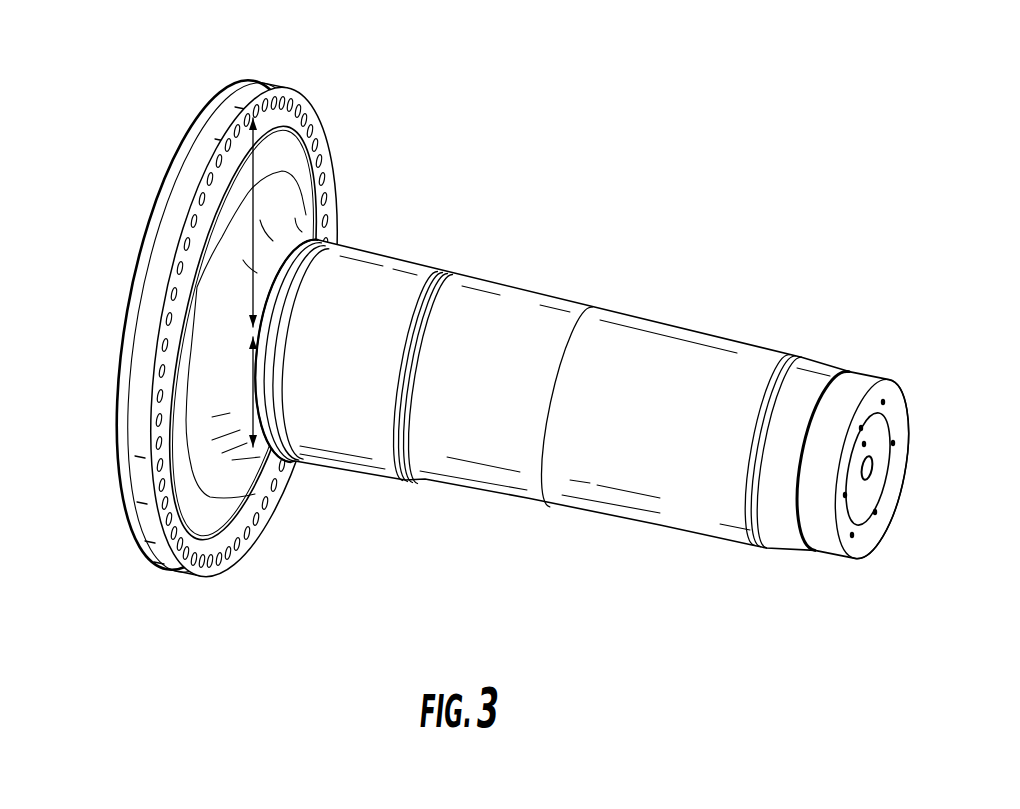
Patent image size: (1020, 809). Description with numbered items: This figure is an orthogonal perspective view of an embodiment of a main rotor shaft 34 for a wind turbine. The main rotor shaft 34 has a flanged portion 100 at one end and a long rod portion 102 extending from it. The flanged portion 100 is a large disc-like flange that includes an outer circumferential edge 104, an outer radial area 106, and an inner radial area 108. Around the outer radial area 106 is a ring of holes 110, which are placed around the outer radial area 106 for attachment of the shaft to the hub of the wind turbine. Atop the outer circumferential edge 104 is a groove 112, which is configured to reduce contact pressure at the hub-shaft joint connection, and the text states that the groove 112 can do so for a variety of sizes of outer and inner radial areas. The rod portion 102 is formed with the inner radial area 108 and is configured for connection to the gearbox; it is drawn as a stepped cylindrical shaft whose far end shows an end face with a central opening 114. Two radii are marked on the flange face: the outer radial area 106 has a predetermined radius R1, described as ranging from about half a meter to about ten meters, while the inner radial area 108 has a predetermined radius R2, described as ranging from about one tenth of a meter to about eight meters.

The main rotor shaft 34 is at (147, 667).
The flanged portion 100 is at (148, 97).
The rod portion 102 is at (619, 551).
The outer circumferential edge 104 is at (266, 90).
The outer radial area 106 is at (203, 549).
The inner radial area 108 is at (226, 474).
The holes 110 is at (174, 325).
The groove 112 is at (197, 144).
The center bore 114 is at (862, 487).
The predetermined radius of outer radial area R1 is at (252, 273).
The predetermined radius of inner radial area R2 is at (252, 398).